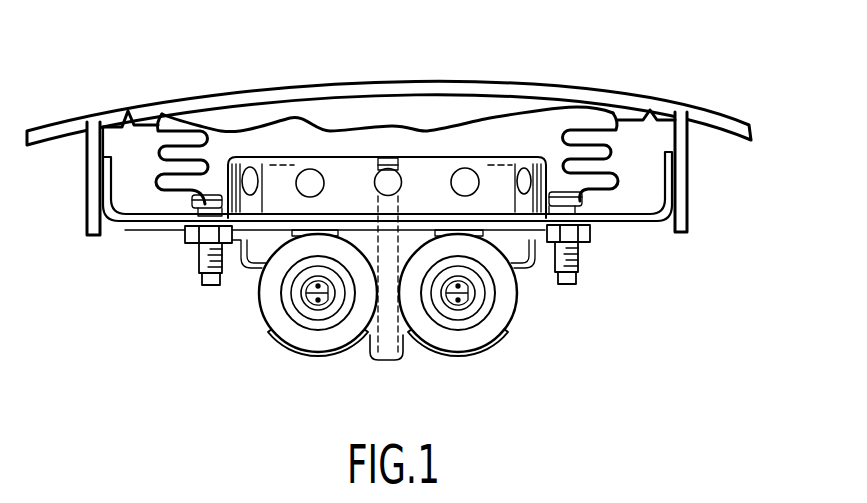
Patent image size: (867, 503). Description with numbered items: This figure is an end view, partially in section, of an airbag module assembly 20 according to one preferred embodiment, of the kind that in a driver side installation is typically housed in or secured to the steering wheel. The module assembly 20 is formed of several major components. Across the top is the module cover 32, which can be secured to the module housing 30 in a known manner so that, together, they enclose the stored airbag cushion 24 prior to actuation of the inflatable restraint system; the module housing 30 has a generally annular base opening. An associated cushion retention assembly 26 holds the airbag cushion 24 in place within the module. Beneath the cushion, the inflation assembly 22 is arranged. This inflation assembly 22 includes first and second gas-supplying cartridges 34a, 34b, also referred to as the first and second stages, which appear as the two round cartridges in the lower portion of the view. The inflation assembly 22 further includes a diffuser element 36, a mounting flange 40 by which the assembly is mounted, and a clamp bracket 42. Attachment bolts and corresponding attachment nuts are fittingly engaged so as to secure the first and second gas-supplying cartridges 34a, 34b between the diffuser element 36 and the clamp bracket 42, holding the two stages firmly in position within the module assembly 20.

The airbag module assembly 20 is at (700, 96).
The inflation assembly 22 is at (537, 360).
The airbag cushion 24 is at (290, 118).
The cushion retention assembly 26 is at (174, 268).
The module housing 30 is at (122, 222).
The module cover 32 is at (95, 125).
The first gas-supplying cartridge 34a is at (270, 307).
The second gas-supplying cartridge 34b is at (480, 335).
The diffuser element 36 is at (427, 192).
The mounting flange 40 is at (540, 236).
The clamp bracket 42 is at (290, 352).